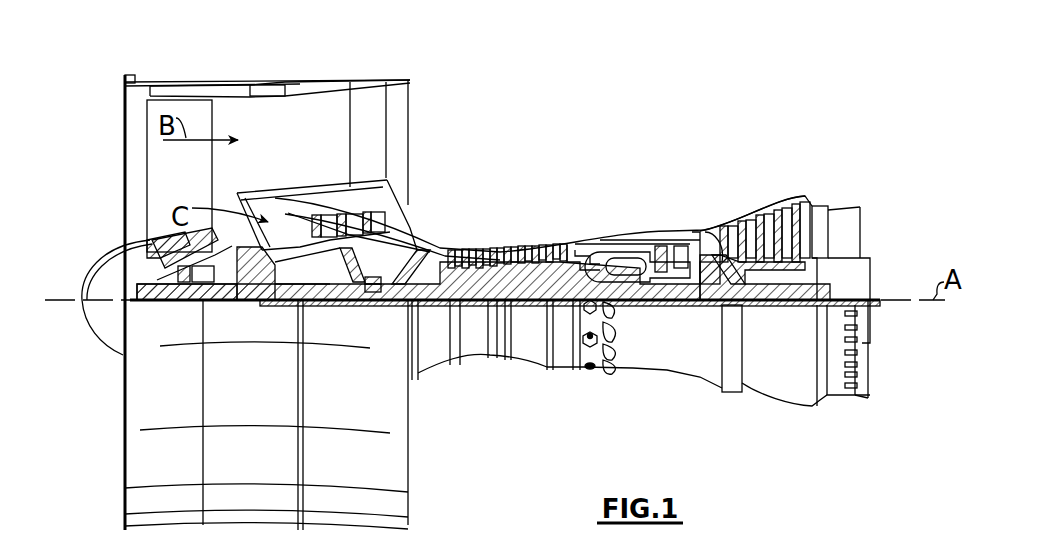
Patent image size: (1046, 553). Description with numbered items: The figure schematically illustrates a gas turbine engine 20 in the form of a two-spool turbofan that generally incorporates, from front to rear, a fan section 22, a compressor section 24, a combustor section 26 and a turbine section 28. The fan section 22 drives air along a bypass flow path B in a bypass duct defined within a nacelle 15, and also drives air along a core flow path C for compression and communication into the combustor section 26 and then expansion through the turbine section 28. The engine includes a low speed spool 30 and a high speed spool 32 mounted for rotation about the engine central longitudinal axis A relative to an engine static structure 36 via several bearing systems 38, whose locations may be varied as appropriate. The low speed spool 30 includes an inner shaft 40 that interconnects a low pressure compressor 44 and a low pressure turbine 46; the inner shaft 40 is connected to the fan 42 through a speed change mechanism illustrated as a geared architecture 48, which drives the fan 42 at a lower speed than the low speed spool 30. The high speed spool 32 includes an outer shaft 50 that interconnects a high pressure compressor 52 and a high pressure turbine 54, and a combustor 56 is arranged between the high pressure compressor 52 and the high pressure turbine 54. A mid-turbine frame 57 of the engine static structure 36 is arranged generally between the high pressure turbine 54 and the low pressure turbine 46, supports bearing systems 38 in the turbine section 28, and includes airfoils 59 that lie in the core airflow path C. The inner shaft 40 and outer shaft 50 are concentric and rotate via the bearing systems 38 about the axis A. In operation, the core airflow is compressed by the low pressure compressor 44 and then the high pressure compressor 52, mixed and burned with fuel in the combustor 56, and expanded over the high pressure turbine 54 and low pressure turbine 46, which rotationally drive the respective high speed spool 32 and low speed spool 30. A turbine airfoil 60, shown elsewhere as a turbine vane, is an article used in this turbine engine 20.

The nacelle 15 is at (265, 80).
The gas turbine engine 20 is at (632, 115).
The fan section 22 is at (210, 70).
The compressor section 24 is at (450, 226).
The combustor section 26 is at (623, 222).
The turbine section 28 is at (748, 184).
The low speed spool 30 is at (531, 312).
The high speed spool 32 is at (565, 258).
The engine static structure 36 is at (565, 370).
The bearing systems 38 is at (370, 290).
The inner shaft 40 is at (420, 360).
The fan 42 is at (194, 185).
The low pressure compressor 44 is at (340, 237).
The low pressure turbine 46 is at (772, 210).
The geared architecture 48 is at (268, 283).
The outer shaft 50 is at (628, 302).
The high pressure compressor 52 is at (520, 255).
The high pressure turbine 54 is at (672, 236).
The combustor 56 is at (626, 258).
The mid-turbine frame 57 is at (708, 248).
The airfoils 59 is at (726, 272).
The turbine airfoil 60 is at (722, 240).